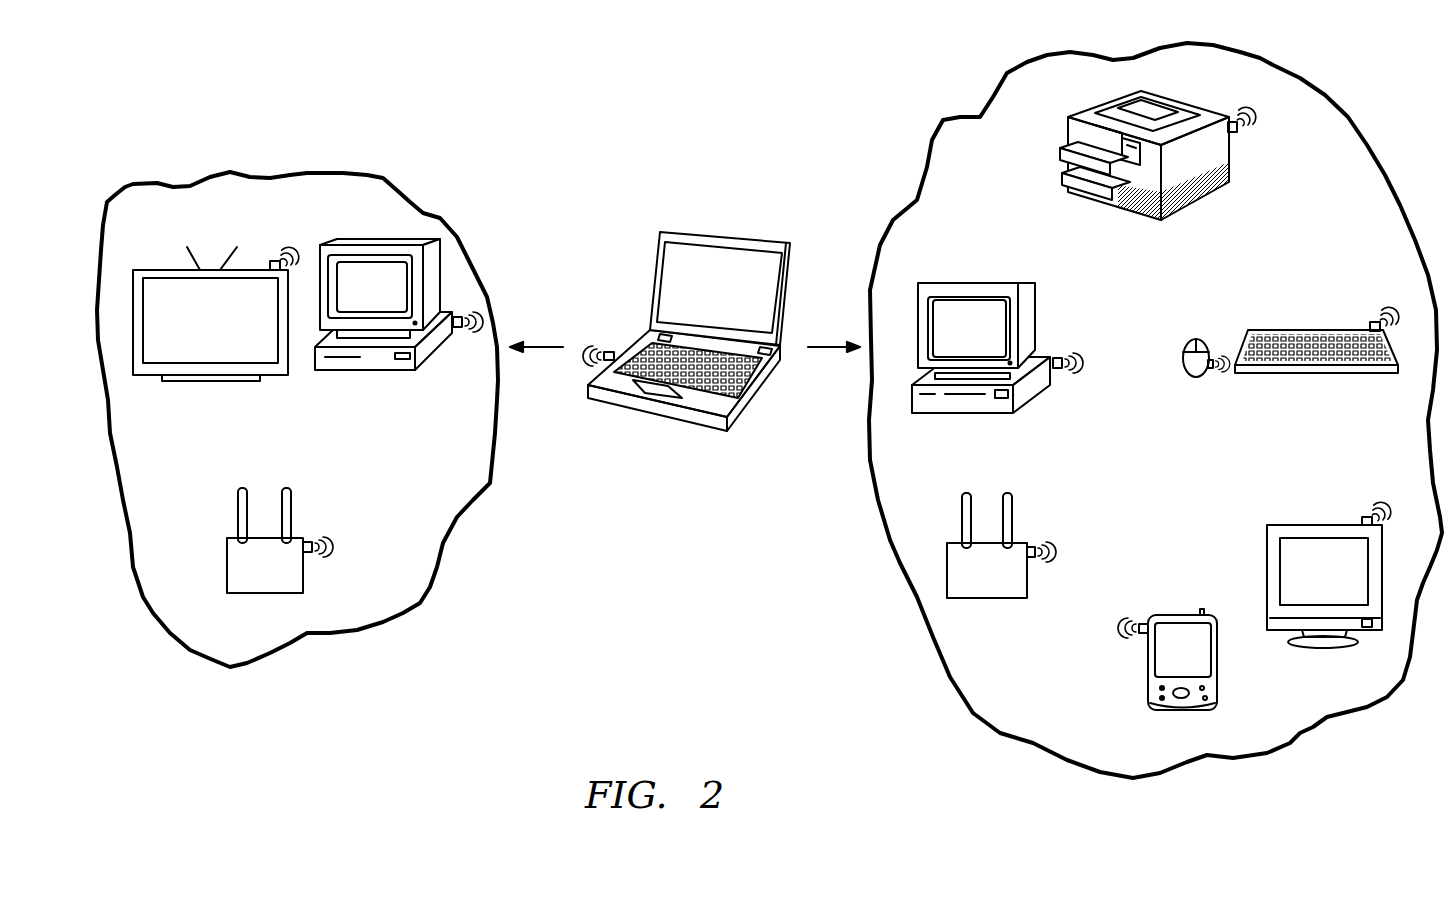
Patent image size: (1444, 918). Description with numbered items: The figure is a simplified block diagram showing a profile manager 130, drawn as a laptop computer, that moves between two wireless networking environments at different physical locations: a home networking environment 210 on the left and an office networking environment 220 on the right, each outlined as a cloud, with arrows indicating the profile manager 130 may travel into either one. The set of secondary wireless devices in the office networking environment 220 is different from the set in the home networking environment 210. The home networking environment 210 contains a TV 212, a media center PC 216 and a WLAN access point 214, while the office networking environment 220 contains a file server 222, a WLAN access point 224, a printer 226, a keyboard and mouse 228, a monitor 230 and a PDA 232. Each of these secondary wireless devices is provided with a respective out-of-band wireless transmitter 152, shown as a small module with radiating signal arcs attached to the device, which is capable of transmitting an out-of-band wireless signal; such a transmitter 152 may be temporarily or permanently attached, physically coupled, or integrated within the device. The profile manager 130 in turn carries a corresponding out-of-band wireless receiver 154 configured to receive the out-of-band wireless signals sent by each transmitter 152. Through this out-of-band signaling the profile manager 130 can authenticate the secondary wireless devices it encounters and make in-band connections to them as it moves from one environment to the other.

The profile manager 130 is at (767, 393).
The out-of-band wireless transmitter 152 is at (275, 261).
The out-of-band wireless receiver 154 is at (612, 352).
The home networking environment 210 is at (340, 174).
The TV 212 is at (155, 270).
The WLAN access point 214 is at (227, 564).
The media center PC 216 is at (337, 243).
The office networking environment 220 is at (1083, 53).
The file server 222 is at (1037, 317).
The WLAN access point 224 is at (1028, 583).
The printer 226 is at (1203, 193).
The keyboard and mouse 228 is at (1293, 332).
The monitor 230 is at (1282, 525).
The PDA 232 is at (1173, 613).